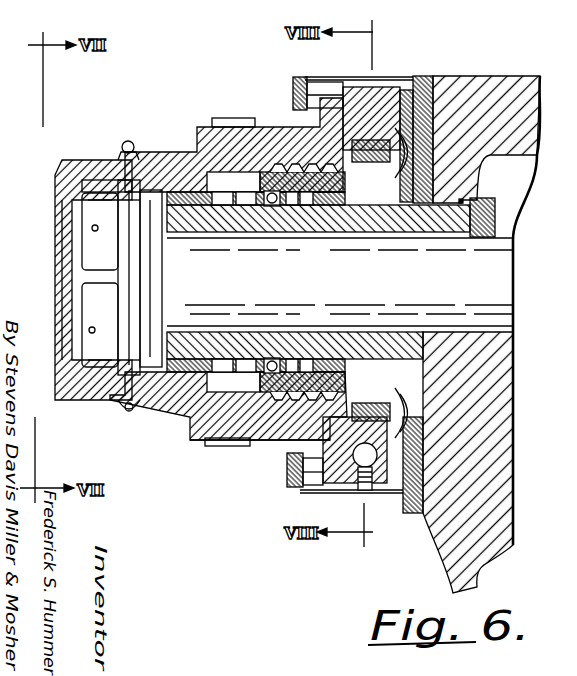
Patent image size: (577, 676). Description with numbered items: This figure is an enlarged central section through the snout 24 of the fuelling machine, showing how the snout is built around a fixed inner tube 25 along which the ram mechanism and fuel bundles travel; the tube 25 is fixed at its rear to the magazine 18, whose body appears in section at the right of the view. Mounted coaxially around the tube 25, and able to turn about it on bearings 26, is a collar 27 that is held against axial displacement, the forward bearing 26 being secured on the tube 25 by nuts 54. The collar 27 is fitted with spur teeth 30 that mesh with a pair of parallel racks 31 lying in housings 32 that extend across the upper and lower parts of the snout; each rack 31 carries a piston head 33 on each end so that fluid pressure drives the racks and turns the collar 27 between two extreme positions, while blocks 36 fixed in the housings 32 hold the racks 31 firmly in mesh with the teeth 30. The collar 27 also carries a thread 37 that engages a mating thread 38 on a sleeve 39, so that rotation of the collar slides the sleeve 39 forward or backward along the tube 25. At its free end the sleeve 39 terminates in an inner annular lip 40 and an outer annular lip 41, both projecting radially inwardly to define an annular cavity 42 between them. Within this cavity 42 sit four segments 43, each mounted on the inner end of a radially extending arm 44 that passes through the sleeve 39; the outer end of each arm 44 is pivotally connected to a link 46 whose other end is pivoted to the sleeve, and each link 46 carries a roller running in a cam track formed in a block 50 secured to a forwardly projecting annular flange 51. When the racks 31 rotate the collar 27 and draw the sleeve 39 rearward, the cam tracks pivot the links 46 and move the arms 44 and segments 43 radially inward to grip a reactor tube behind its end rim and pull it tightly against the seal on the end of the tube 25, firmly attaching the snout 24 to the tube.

The magazine 18 is at (520, 85).
The snout 24 is at (88, 430).
The inner tube 25 is at (387, 224).
The bearings 26 is at (300, 205).
The collar 27 is at (352, 203).
The spur teeth 30 is at (392, 168).
The racks 31 is at (376, 164).
The housings 32 is at (346, 77).
The piston head 33 is at (397, 163).
The blocks 36 is at (368, 97).
The thread 37 is at (291, 196).
The mating thread 38 is at (287, 170).
The sleeve 39 is at (184, 163).
The inner annular lip 40 is at (134, 200).
The outer annular lip 41 is at (67, 197).
The annular cavity 42 is at (94, 182).
The segments 43 is at (96, 251).
The arm 44 is at (121, 153).
The link 46 is at (140, 178).
The block 50 is at (231, 112).
The annular flange 51 is at (166, 218).
The nuts 54 is at (241, 208).